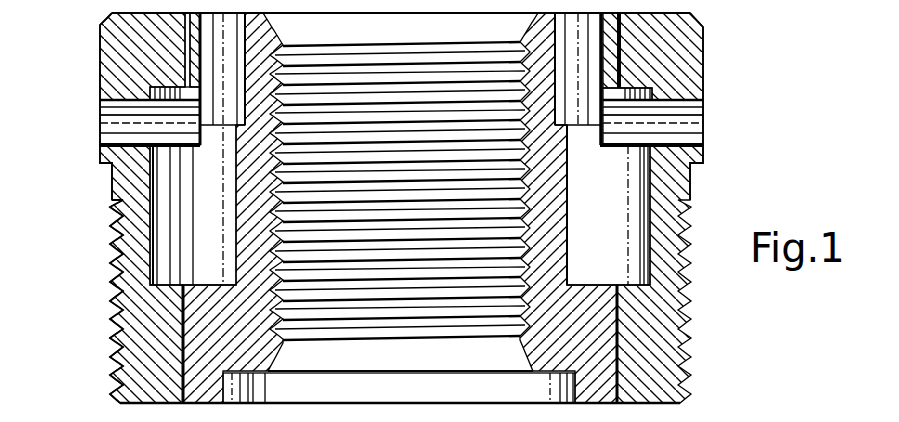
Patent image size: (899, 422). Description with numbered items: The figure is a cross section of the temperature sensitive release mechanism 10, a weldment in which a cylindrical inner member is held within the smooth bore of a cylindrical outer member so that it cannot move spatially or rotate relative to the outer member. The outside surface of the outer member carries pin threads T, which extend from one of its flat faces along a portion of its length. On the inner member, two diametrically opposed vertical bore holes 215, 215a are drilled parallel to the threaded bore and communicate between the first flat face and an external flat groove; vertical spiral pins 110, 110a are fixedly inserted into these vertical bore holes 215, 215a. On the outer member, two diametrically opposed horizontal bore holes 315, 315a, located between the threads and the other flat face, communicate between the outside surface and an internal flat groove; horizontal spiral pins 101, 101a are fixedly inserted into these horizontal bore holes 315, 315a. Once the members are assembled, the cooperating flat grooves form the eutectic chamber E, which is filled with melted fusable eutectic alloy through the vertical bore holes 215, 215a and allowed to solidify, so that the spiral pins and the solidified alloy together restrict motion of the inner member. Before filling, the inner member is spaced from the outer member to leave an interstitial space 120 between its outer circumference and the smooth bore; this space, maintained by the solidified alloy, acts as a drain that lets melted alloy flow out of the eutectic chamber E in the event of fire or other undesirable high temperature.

The temperature sensitive release mechanism 10 is at (100, 258).
The pin threads T is at (112, 352).
The vertical spiral pin 110a is at (207, 36).
The vertical bore hole 215a is at (187, 66).
The horizontal spiral pin 101a is at (123, 108).
The horizontal bore hole 315a is at (117, 142).
The vertical spiral pin 110 is at (582, 33).
The vertical bore hole 215 is at (603, 68).
The horizontal spiral pin 101 is at (680, 110).
The horizontal bore hole 315 is at (687, 135).
The eutectic chamber E is at (615, 220).
The interstitial space 120 is at (627, 355).